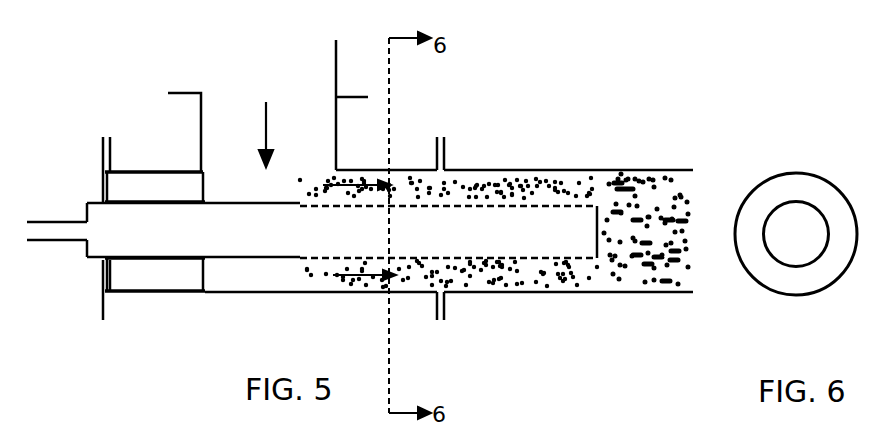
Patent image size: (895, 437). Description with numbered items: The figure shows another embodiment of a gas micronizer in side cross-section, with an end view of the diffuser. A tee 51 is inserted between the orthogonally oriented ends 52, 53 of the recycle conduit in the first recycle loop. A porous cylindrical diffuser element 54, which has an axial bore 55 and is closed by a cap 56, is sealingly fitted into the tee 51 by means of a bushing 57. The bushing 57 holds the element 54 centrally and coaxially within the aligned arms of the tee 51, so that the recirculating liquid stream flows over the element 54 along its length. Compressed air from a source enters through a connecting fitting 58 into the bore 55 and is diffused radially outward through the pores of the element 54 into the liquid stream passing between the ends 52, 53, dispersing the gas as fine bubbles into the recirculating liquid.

In FIG. 5, the tee 51 is at (201, 172).
In FIG. 5, the end of recycle conduit 52 is at (346, 91).
In FIG. 5, the end of recycle conduit 53 is at (603, 170).
In FIG. 6, the end of recycle conduit 53 is at (772, 177).
In FIG. 5, the porous cylindrical diffuser element 54 is at (472, 262).
In FIG. 6, the porous cylindrical diffuser element 54 is at (828, 262).
In FIG. 5, the axial bore 55 is at (542, 227).
In FIG. 6, the axial bore 55 is at (788, 242).
In FIG. 5, the cap 56 is at (602, 247).
In FIG. 5, the bushing 57 is at (103, 272).
In FIG. 5, the connecting fitting 58 is at (55, 222).